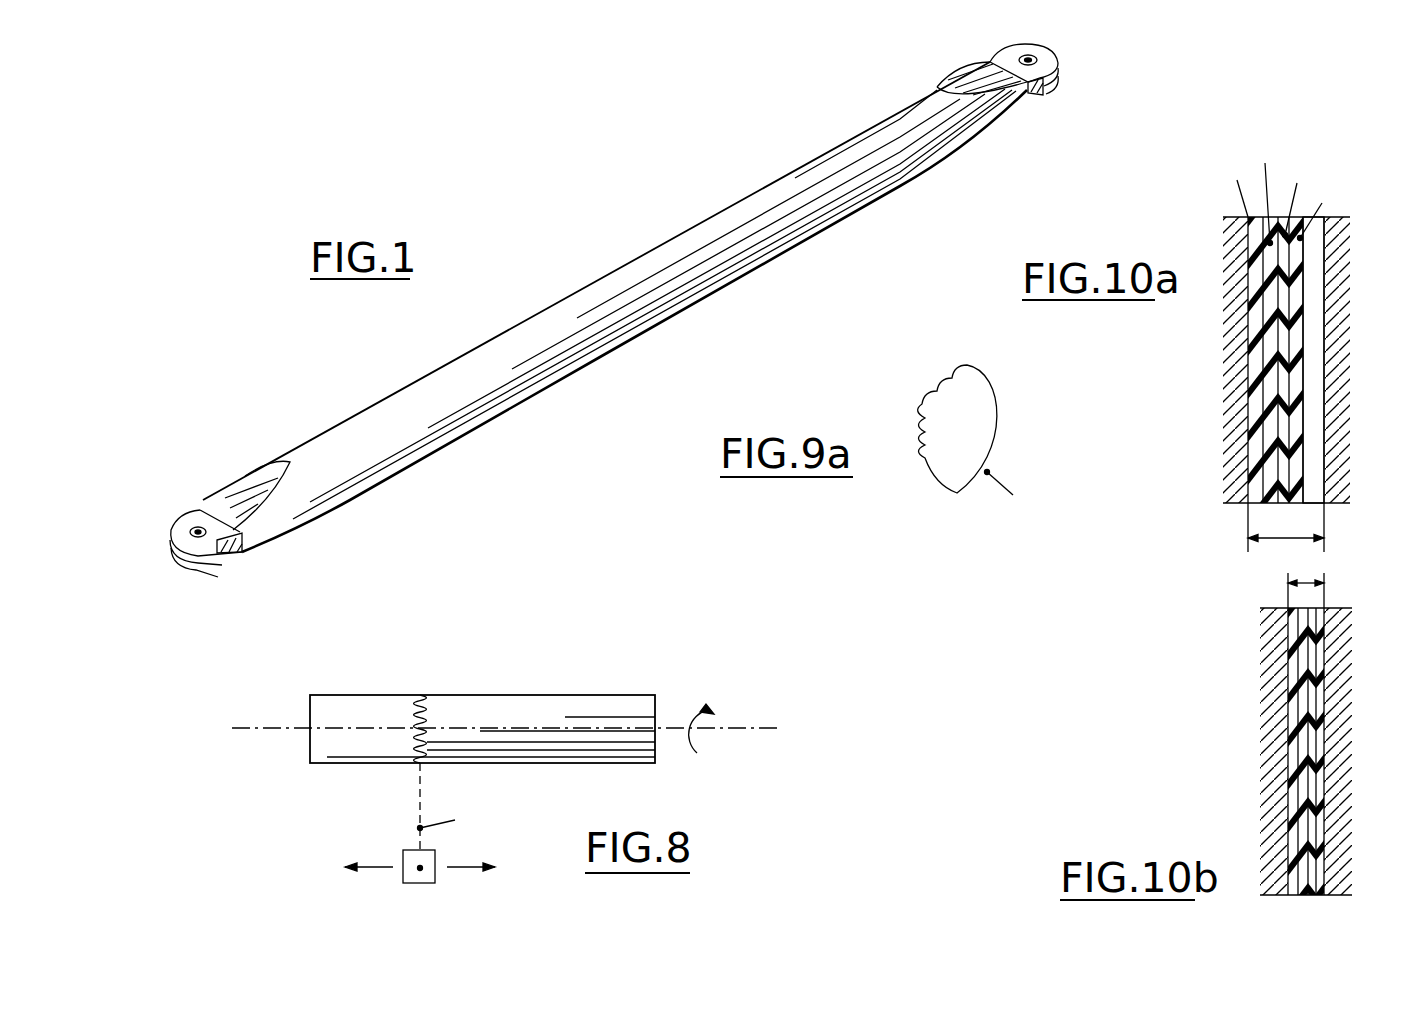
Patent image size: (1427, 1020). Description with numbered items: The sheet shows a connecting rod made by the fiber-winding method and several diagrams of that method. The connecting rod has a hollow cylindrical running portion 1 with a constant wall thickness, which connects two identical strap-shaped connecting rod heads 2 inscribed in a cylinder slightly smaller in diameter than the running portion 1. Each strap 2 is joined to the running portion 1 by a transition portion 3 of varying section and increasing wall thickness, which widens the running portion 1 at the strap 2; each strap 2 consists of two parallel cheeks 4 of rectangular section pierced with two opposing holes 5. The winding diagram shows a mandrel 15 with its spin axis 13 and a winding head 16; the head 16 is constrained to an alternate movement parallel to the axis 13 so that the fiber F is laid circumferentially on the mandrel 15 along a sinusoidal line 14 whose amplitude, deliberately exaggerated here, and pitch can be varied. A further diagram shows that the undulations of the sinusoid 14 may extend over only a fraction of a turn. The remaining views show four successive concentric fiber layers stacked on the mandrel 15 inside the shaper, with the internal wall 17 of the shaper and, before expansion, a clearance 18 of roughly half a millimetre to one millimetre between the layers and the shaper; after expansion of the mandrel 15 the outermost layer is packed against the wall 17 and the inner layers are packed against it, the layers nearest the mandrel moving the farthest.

In FIG. 1, the running portion 1 is at (483, 330).
In FIG. 1, the connecting rod head 2 is at (167, 515).
In FIG. 1, the transition portion 3 is at (238, 463).
In FIG. 1, the cheek 4 is at (200, 570).
In FIG. 1, the hole 5 is at (197, 528).
In FIG. 8, the spin axis 13 is at (762, 728).
In FIG. 8, the sinusoidal line 14 is at (408, 710).
In FIG. 9A, the sinusoidal line 14 is at (918, 402).
In FIG. 8, the mandrel 15 is at (497, 692).
In FIG. 10A, the mandrel 15 is at (1235, 465).
In FIG. 10B, the mandrel 15 is at (1277, 743).
In FIG. 8, the winding head 16 is at (420, 868).
In FIG. 10A, the internal wall of the shaper 17 is at (1325, 290).
In FIG. 10B, the internal wall of the shaper 17 is at (1322, 783).
In FIG. 10A, the clearance 18 is at (1315, 323).